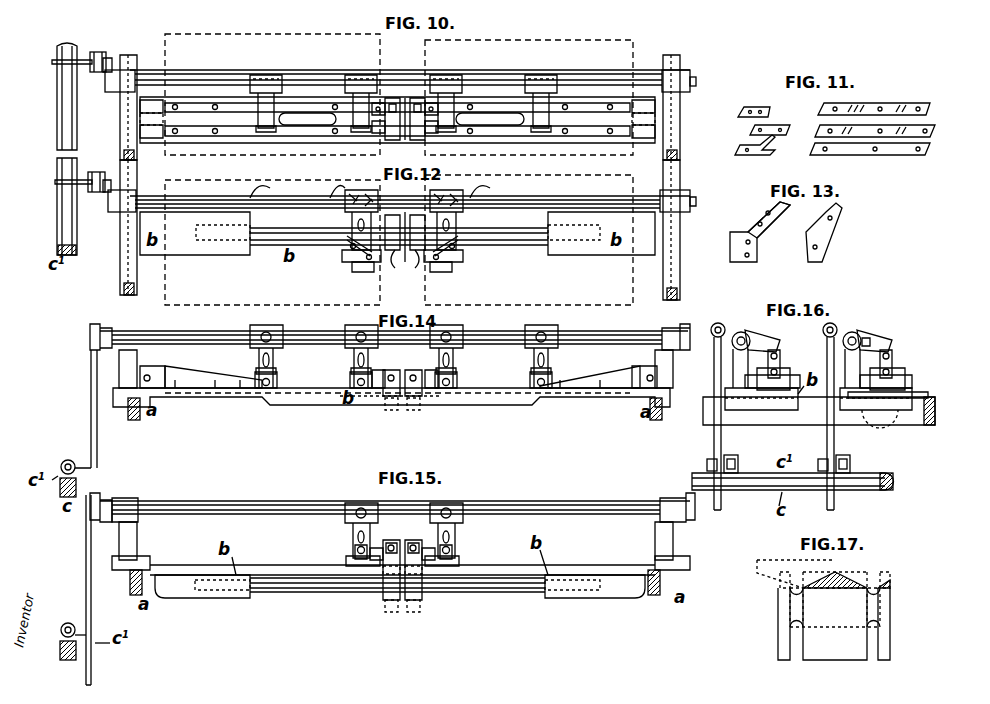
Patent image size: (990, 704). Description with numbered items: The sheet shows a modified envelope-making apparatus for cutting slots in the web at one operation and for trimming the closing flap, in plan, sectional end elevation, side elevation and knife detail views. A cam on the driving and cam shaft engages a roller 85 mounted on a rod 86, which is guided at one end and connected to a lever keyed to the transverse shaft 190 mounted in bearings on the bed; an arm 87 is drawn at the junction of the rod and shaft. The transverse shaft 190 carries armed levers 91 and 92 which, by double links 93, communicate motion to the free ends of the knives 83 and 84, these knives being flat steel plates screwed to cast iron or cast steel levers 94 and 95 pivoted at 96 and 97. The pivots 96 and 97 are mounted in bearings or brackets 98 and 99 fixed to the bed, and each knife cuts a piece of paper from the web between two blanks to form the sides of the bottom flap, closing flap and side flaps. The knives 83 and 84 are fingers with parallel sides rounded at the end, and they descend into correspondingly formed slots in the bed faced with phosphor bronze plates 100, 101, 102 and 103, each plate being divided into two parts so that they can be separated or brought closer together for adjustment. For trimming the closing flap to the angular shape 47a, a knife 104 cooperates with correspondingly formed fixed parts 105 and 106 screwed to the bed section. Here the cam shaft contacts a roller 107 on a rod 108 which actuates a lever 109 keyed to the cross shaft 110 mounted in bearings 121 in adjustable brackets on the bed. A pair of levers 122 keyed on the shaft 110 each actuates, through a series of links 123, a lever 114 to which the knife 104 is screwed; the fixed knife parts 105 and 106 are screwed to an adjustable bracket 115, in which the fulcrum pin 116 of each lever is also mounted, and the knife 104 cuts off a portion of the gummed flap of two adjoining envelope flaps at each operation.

In FIG. 17, the angular shape of closing flap 47a is at (842, 578).
In FIG. 11, the knife 83 is at (872, 100).
In FIG. 14, the knife 83 is at (279, 393).
In FIG. 11, the knife 84 is at (772, 112).
In FIG. 14, the knife 84 is at (448, 394).
In FIG. 10, the roller 85 is at (58, 64).
In FIG. 14, the roller 85 is at (68, 459).
In FIG. 16, the roller 85 is at (729, 463).
In FIG. 10, the rod 86 is at (102, 74).
In FIG. 14, the rod 86 is at (91, 390).
In FIG. 16, the rod 86 is at (714, 445).
In FIG. 10, the arm 87 is at (104, 58).
In FIG. 16, the arm 87 is at (725, 323).
In FIG. 10, the armed lever 91 is at (268, 92).
In FIG. 14, the armed lever 91 is at (268, 328).
In FIG. 16, the armed lever 91 is at (768, 339).
In FIG. 10, the armed lever 92 is at (361, 92).
In FIG. 14, the armed lever 92 is at (360, 328).
In FIG. 14, the double links 93 is at (277, 356).
In FIG. 16, the double links 93 is at (781, 362).
In FIG. 10, the lever 94 is at (636, 122).
In FIG. 14, the lever 94 is at (222, 374).
In FIG. 10, the lever 95 is at (374, 120).
In FIG. 14, the lever 95 is at (378, 376).
In FIG. 14, the pivot 96 is at (148, 373).
In FIG. 14, the pivot 97 is at (396, 372).
In FIG. 10, the bearing or bracket 98 is at (158, 100).
In FIG. 10, the bearing or bracket 99 is at (422, 104).
In FIG. 10, the plate 100 is at (548, 136).
In FIG. 11, the plate 100 is at (912, 150).
In FIG. 10, the plate 101 is at (569, 100).
In FIG. 11, the plate 101 is at (890, 130).
In FIG. 11, the plate 102 is at (770, 152).
In FIG. 11, the plate 103 is at (783, 127).
In FIG. 13, the knife 104 is at (836, 204).
In FIG. 12, the knife 104 is at (348, 250).
In FIG. 15, the knife 104 is at (348, 557).
In FIG. 17, the knife 104 is at (766, 574).
In FIG. 13, the fixed knife part 105 is at (772, 210).
In FIG. 12, the fixed knife part 105 is at (345, 220).
In FIG. 16, the fixed knife part 105 is at (860, 412).
In FIG. 13, the fixed knife part 106 is at (770, 232).
In FIG. 12, the fixed knife part 106 is at (346, 252).
In FIG. 15, the fixed knife part 106 is at (346, 564).
In FIG. 16, the fixed knife part 106 is at (928, 396).
In FIG. 12, the roller 107 is at (58, 182).
In FIG. 15, the roller 107 is at (69, 622).
In FIG. 16, the roller 107 is at (852, 460).
In FIG. 12, the rod 108 is at (100, 192).
In FIG. 15, the rod 108 is at (86, 550).
In FIG. 16, the rod 108 is at (827, 449).
In FIG. 12, the lever 109 is at (105, 200).
In FIG. 15, the lever 109 is at (104, 503).
In FIG. 16, the lever 109 is at (847, 330).
In FIG. 12, the shaft 110 is at (260, 198).
In FIG. 15, the shaft 110 is at (316, 502).
In FIG. 15, the lever 114 is at (378, 548).
In FIG. 16, the lever 114 is at (906, 376).
In FIG. 12, the bracket 115 is at (364, 270).
In FIG. 15, the bracket 115 is at (402, 575).
In FIG. 12, the fulcrum pin 116 is at (405, 266).
In FIG. 15, the fulcrum pin 116 is at (409, 542).
In FIG. 16, the fulcrum pin 116 is at (913, 386).
In FIG. 12, the bearing 121 is at (685, 205).
In FIG. 15, the bearing 121 is at (136, 512).
In FIG. 16, the bearing 121 is at (864, 338).
In FIG. 12, the lever 122 is at (346, 197).
In FIG. 15, the lever 122 is at (360, 504).
In FIG. 16, the lever 122 is at (884, 343).
In FIG. 15, the links 123 is at (352, 538).
In FIG. 16, the links 123 is at (893, 361).
In FIG. 10, the transverse shaft 190 is at (226, 78).
In FIG. 14, the transverse shaft 190 is at (202, 338).
In FIG. 16, the transverse shaft 190 is at (744, 332).